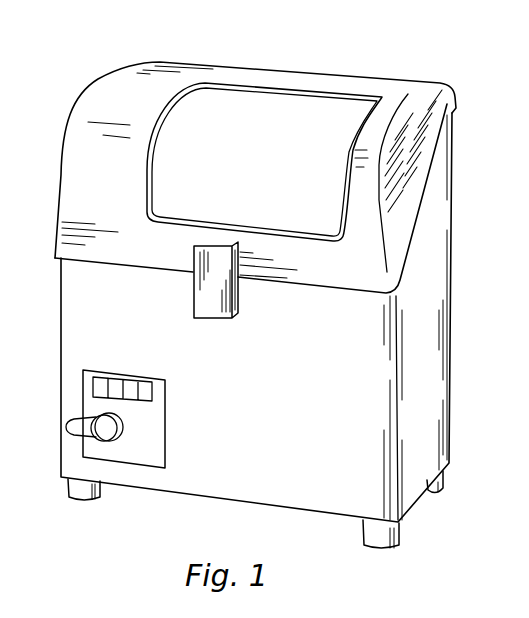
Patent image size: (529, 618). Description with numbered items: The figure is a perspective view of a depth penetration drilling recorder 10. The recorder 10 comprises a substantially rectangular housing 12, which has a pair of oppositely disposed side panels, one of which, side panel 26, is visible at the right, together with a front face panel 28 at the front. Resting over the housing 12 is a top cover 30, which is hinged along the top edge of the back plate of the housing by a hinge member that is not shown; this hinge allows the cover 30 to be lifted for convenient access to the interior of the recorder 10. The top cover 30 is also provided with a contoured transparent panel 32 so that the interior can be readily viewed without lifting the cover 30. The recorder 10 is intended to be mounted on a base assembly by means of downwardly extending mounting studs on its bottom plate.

The depth penetration drilling recorder 10 is at (113, 76).
The housing 12 is at (418, 340).
The side panel 26 is at (437, 413).
The front face panel 28 is at (76, 353).
The top cover 30 is at (85, 200).
The contoured transparent panel 32 is at (242, 105).